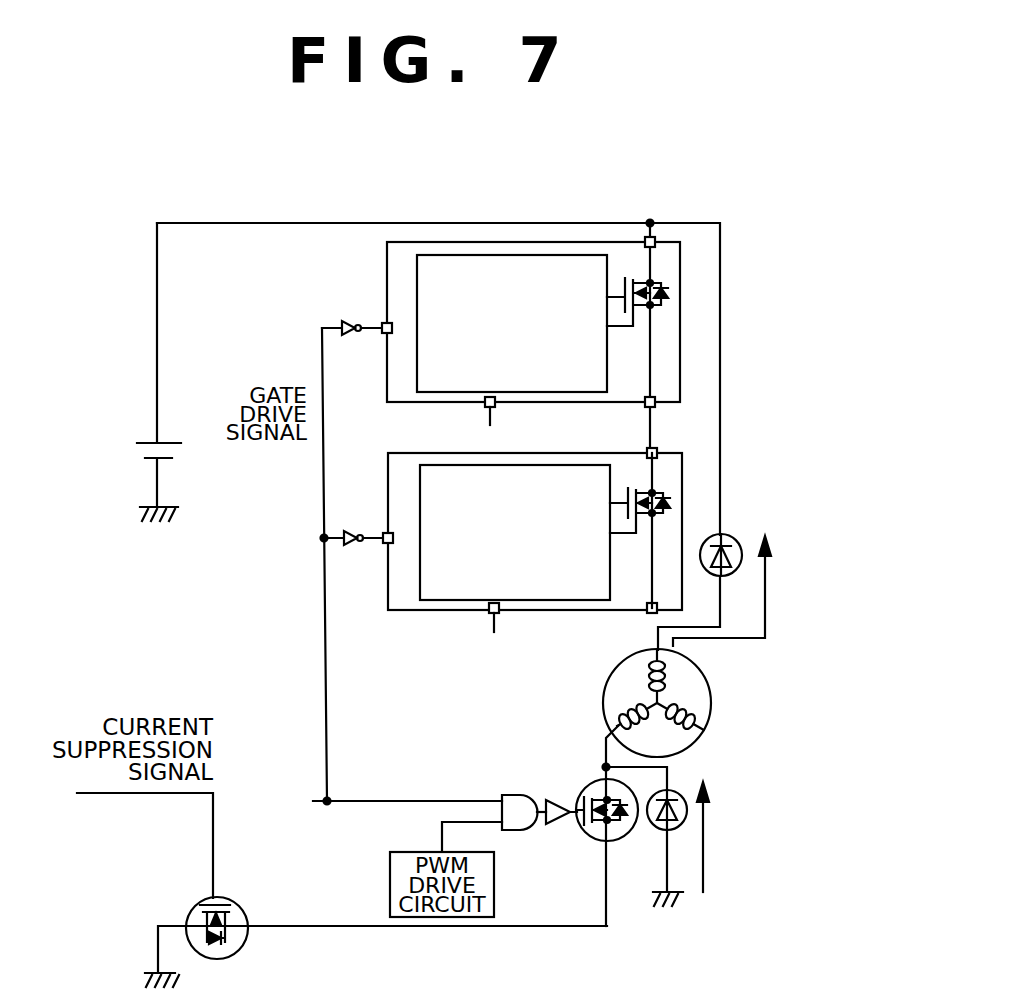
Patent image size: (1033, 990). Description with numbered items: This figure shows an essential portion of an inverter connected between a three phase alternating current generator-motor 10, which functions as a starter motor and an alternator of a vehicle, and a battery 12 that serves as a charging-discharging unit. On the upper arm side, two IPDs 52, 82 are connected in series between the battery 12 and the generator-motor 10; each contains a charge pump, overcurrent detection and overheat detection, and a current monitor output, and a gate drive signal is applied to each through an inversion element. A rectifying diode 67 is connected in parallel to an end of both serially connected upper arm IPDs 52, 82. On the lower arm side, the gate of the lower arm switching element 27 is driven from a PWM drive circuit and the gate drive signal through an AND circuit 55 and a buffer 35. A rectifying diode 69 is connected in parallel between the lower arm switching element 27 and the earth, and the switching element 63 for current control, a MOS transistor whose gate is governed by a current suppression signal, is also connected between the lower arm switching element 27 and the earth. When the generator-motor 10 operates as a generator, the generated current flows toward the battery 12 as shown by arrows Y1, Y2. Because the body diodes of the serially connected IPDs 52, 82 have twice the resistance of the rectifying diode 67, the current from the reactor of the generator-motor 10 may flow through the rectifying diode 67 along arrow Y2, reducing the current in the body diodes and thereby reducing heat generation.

The battery 12 is at (150, 441).
The upper arm IPD 82 is at (386, 289).
The upper arm IPD 52 is at (437, 612).
The rectifying diode 67 is at (732, 537).
The three phase alternating current generator-motor 10 is at (610, 666).
The arrow Y2 is at (750, 642).
The AND circuit 55 is at (500, 795).
The buffer 35 is at (545, 806).
The lower arm switching element 27 is at (590, 839).
The rectifying diode 69 is at (658, 832).
The MOS transistor 63 is at (200, 903).
The arrow Y1 is at (705, 840).